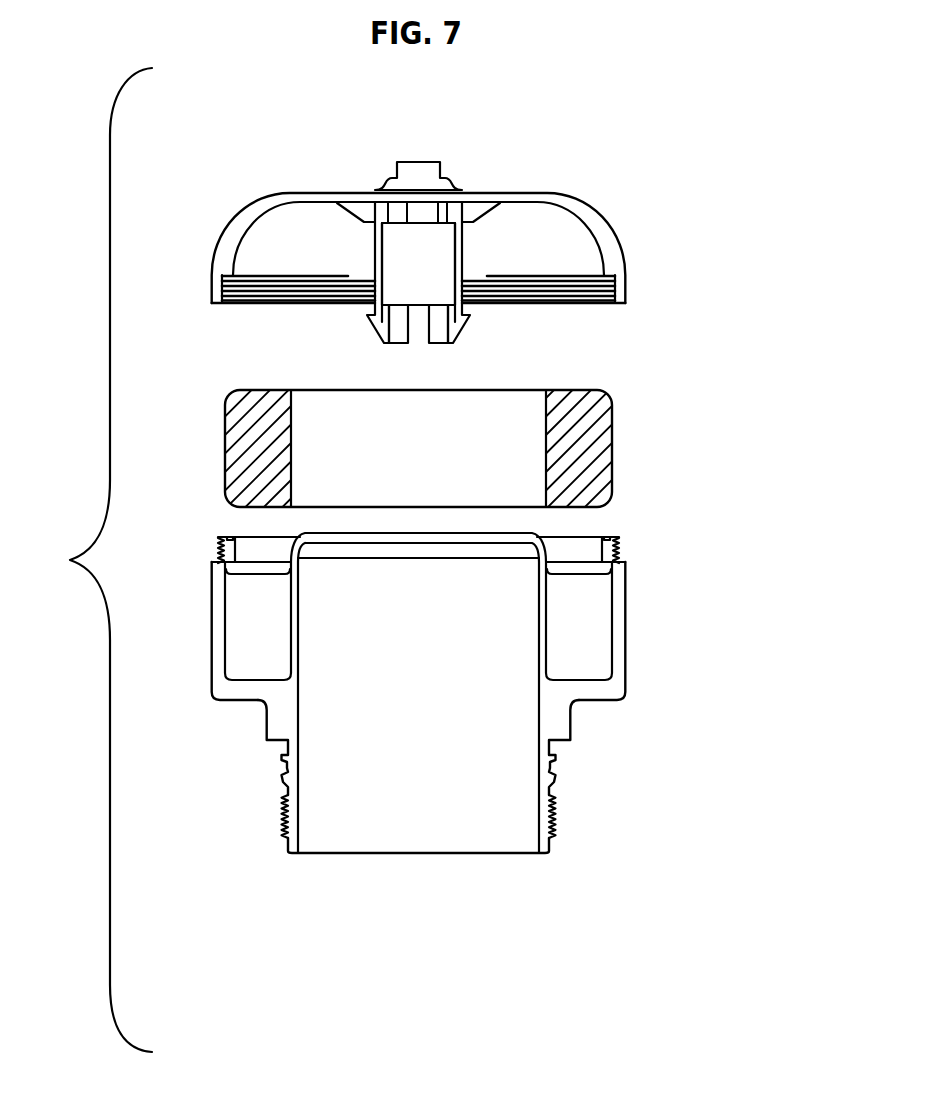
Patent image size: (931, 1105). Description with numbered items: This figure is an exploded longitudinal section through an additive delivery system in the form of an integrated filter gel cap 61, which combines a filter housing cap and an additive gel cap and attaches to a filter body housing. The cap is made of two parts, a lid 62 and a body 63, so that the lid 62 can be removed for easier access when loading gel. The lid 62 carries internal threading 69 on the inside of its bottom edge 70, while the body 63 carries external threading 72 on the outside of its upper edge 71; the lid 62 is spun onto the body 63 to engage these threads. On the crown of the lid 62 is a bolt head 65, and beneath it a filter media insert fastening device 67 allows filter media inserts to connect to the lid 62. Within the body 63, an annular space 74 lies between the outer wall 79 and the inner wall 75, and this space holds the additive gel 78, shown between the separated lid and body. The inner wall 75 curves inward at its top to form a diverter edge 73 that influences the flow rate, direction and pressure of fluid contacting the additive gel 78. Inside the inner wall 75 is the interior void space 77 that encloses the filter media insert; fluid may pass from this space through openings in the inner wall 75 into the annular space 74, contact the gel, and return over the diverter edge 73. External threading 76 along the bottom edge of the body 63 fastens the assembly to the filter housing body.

The integrated filter gel cap 61 is at (91, 560).
The lid 62 is at (683, 233).
The body 63 is at (707, 612).
The bolt head 65 is at (420, 177).
The filter media insert fastening device 67 is at (418, 280).
The internal threading 69 is at (528, 302).
The bottom edge 70 is at (617, 308).
The upper edge 71 is at (242, 524).
The external threading 72 is at (216, 541).
The diverter edge 73 is at (508, 550).
The annular space 74 is at (585, 628).
The inner wall 75 is at (548, 635).
The external threading 76 is at (563, 815).
The interior void space 77 is at (433, 787).
The additive gel 78 is at (690, 440).
The outer wall 79 is at (632, 630).